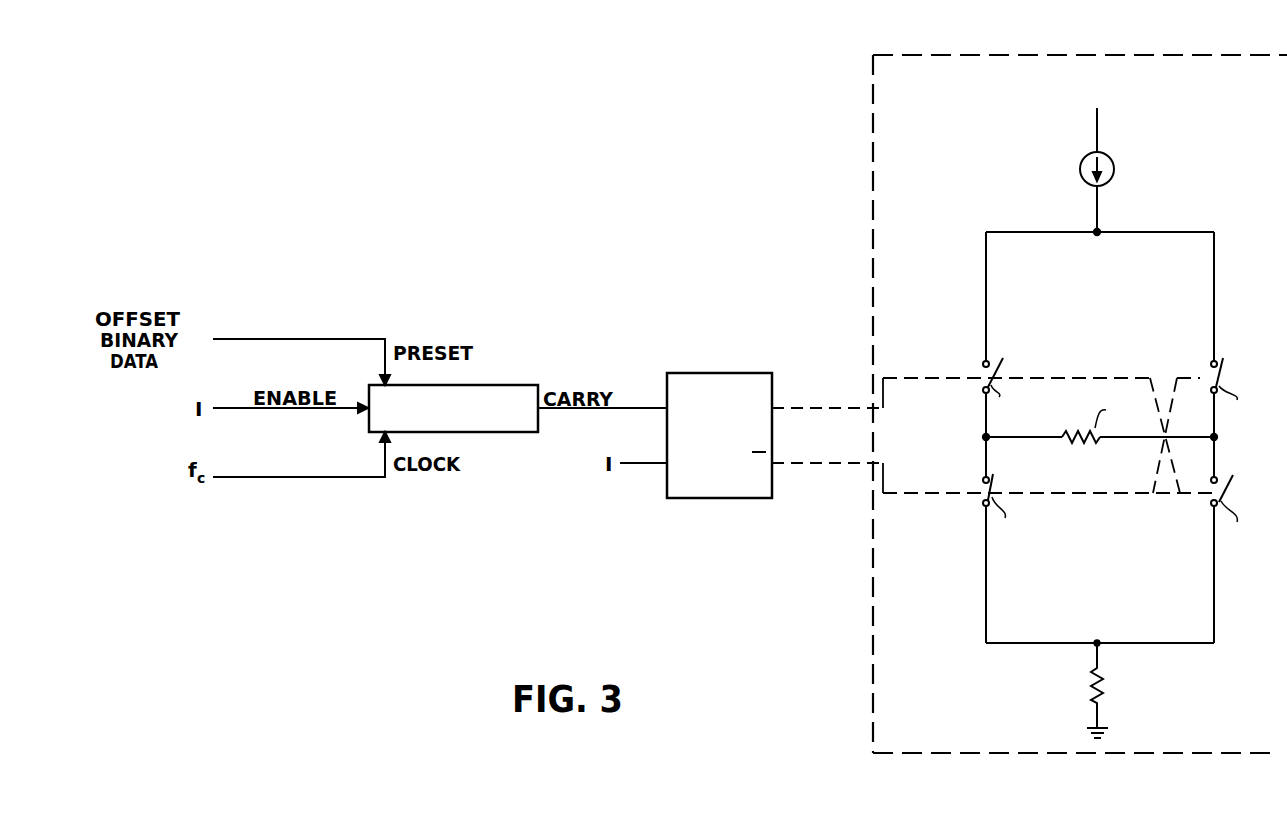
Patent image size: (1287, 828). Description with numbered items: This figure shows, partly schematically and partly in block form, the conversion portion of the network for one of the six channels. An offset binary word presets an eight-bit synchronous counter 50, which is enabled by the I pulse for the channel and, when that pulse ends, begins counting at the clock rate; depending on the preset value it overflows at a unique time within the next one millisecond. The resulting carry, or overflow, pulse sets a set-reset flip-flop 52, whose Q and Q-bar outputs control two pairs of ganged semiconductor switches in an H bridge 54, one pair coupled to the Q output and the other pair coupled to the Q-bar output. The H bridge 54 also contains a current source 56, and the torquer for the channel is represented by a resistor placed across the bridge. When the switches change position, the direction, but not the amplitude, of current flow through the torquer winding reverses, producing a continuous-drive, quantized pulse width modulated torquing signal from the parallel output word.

The synchronous counter 50 is at (506, 385).
The set-reset flip-flop 52 is at (710, 373).
The H bridge 54 is at (873, 190).
The current source 56 is at (1081, 172).